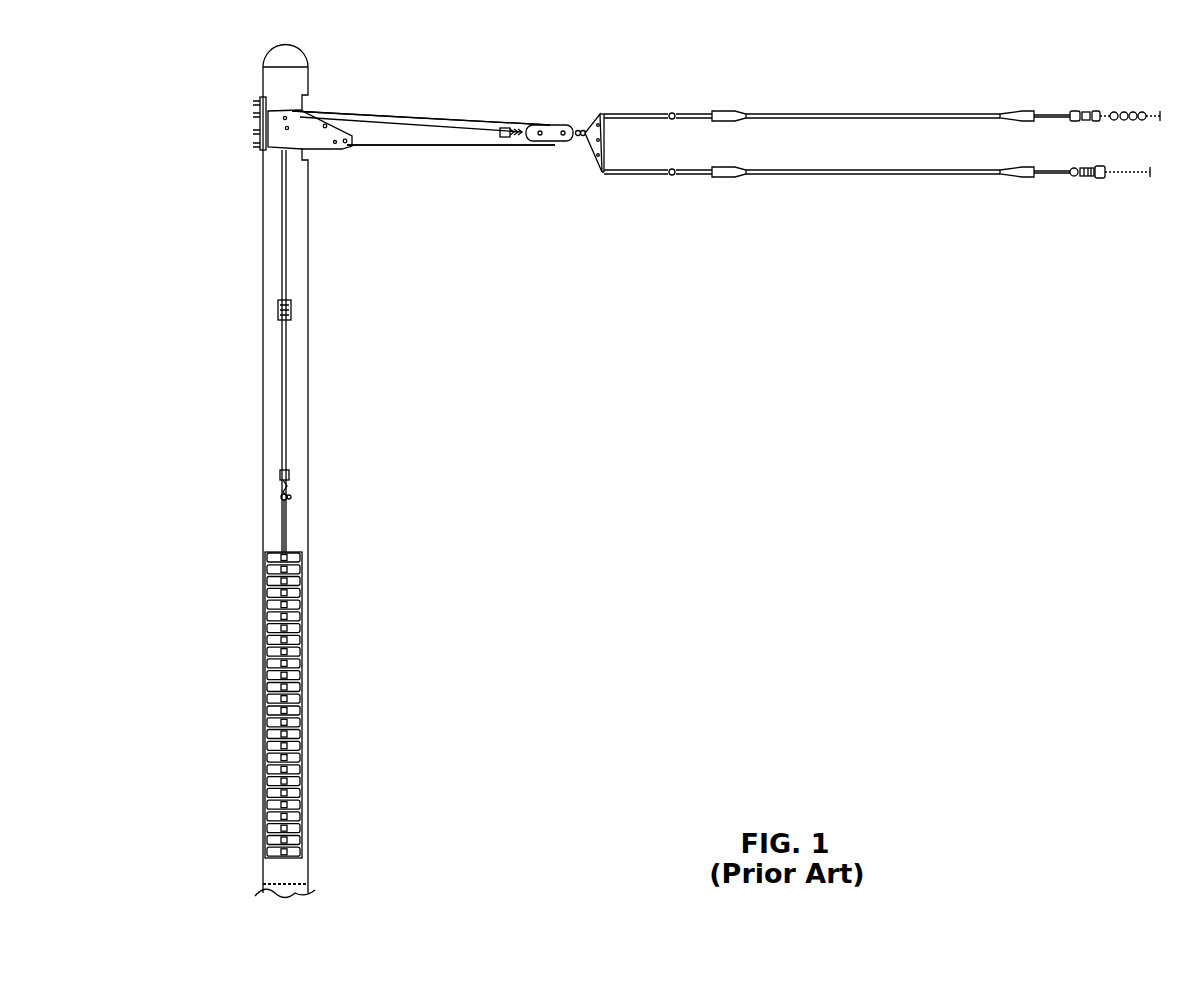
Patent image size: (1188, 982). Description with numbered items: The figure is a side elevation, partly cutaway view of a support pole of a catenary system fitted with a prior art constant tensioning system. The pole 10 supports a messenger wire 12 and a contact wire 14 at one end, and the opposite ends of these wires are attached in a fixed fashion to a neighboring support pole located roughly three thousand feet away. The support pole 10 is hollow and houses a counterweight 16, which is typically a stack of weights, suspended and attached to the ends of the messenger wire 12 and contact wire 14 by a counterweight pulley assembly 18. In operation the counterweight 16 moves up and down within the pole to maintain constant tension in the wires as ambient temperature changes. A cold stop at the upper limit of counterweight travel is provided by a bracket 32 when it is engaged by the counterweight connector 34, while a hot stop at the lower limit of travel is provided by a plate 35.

The pole 10 is at (263, 85).
The messenger wire 12 is at (801, 115).
The contact wire 14 is at (808, 175).
The counterweight 16 is at (267, 652).
The counterweight pulley assembly 18 is at (391, 100).
The bracket 32 is at (278, 312).
The counterweight connector 34 is at (281, 497).
The plate 35 is at (290, 883).